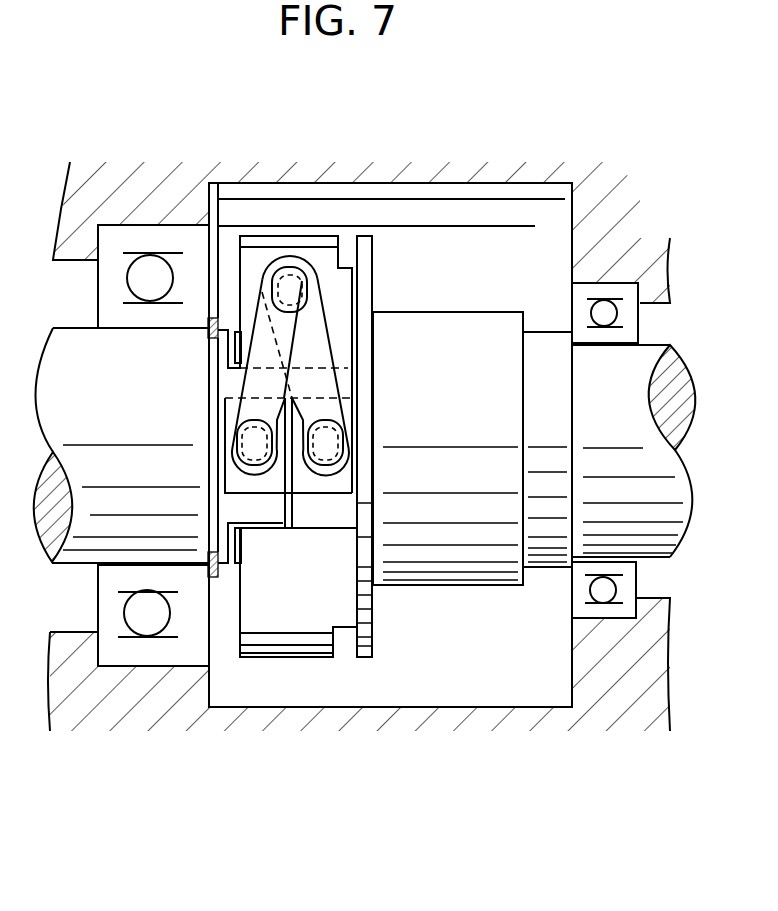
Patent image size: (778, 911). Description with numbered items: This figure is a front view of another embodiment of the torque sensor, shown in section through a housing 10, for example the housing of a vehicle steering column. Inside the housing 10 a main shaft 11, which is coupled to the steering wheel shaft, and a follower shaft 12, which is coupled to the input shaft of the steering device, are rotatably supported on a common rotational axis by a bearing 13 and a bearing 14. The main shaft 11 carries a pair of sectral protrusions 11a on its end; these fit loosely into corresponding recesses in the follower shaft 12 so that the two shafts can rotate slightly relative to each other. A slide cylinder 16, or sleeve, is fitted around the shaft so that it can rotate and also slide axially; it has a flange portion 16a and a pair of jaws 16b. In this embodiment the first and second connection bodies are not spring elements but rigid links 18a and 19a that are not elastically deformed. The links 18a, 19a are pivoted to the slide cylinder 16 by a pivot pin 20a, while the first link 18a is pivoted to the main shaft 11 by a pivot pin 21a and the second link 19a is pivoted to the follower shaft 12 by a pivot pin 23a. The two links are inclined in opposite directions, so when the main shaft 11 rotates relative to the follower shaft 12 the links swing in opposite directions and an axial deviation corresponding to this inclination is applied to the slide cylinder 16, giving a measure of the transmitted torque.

The housing 10 is at (468, 175).
The main shaft 11 is at (663, 530).
The sectral protrusions 11a is at (237, 333).
The follower shaft 12 is at (83, 542).
The bearing 13 is at (128, 657).
The bearing 14 is at (607, 612).
The slide cylinder 16 is at (437, 567).
The flange portion 16a is at (368, 645).
The jaws 16b is at (348, 327).
The link 18a is at (333, 385).
The link 19a is at (250, 387).
The pivot pin 20a is at (300, 282).
The pivot pin 21a is at (325, 448).
The pivot pin 23a is at (250, 450).